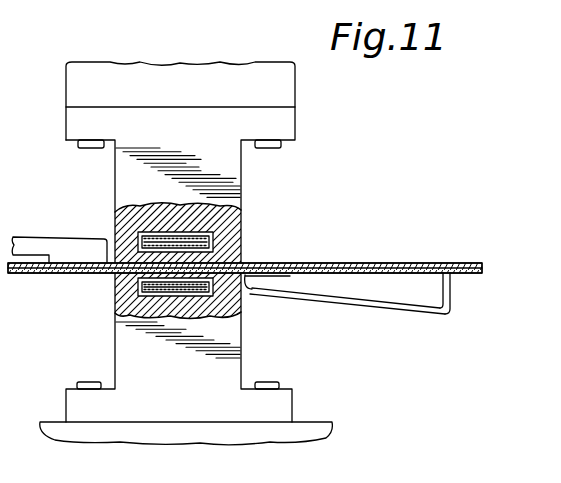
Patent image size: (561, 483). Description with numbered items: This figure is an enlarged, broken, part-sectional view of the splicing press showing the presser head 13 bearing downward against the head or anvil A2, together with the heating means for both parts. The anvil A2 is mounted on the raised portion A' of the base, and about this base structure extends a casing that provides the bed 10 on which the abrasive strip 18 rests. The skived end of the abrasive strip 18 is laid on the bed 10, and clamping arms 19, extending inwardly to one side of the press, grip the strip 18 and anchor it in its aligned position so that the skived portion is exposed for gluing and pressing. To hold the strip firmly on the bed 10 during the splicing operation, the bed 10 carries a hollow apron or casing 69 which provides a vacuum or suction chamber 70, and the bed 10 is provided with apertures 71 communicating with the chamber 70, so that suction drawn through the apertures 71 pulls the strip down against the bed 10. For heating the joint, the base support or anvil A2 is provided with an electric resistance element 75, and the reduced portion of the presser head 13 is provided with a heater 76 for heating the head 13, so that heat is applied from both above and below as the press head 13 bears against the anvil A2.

The presser head 13 is at (250, 177).
The abrasive strip 18 is at (24, 268).
The clamping arms 19 is at (49, 248).
The bed 10 is at (32, 275).
The electric resistance element 75 is at (140, 287).
The heater 76 is at (243, 233).
The apertures 71 is at (363, 271).
The hollow apron or casing 69 is at (363, 307).
The vacuum or suction chamber 70 is at (430, 292).
The head or anvil A2 is at (232, 359).
The raised portion of the base A' is at (209, 460).